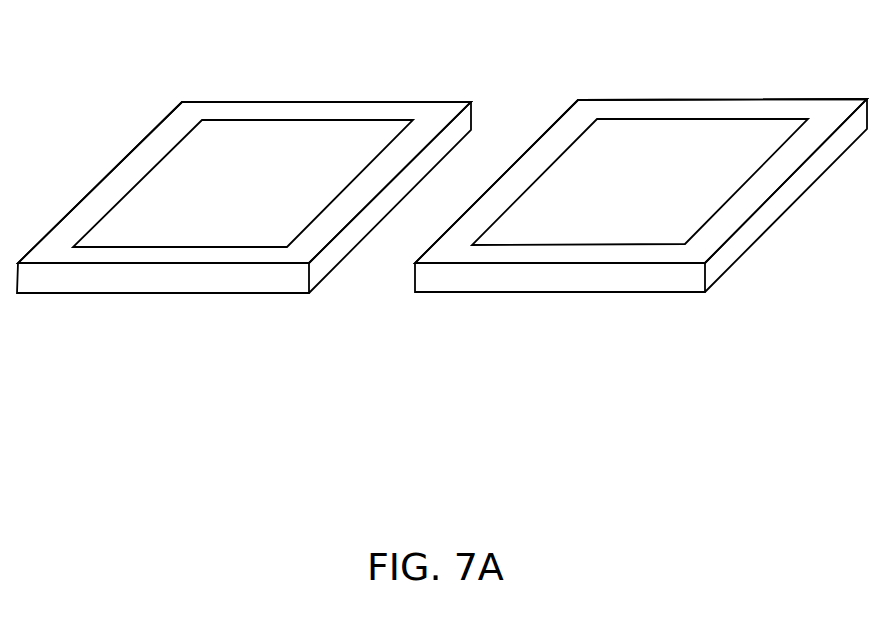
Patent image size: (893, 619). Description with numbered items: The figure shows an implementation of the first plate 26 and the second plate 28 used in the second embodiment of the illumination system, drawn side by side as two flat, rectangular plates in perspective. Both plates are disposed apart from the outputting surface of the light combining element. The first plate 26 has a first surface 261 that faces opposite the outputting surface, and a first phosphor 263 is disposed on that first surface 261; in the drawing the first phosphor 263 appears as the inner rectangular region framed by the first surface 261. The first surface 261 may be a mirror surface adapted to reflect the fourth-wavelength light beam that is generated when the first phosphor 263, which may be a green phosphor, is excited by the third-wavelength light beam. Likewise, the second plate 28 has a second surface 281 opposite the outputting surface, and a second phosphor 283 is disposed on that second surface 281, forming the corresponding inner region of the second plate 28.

The first plate 26 is at (244, 214).
The first surface 261 is at (430, 123).
The first phosphor 263 is at (305, 145).
The second plate 28 is at (641, 194).
The second surface 281 is at (827, 118).
The second phosphor 283 is at (648, 140).